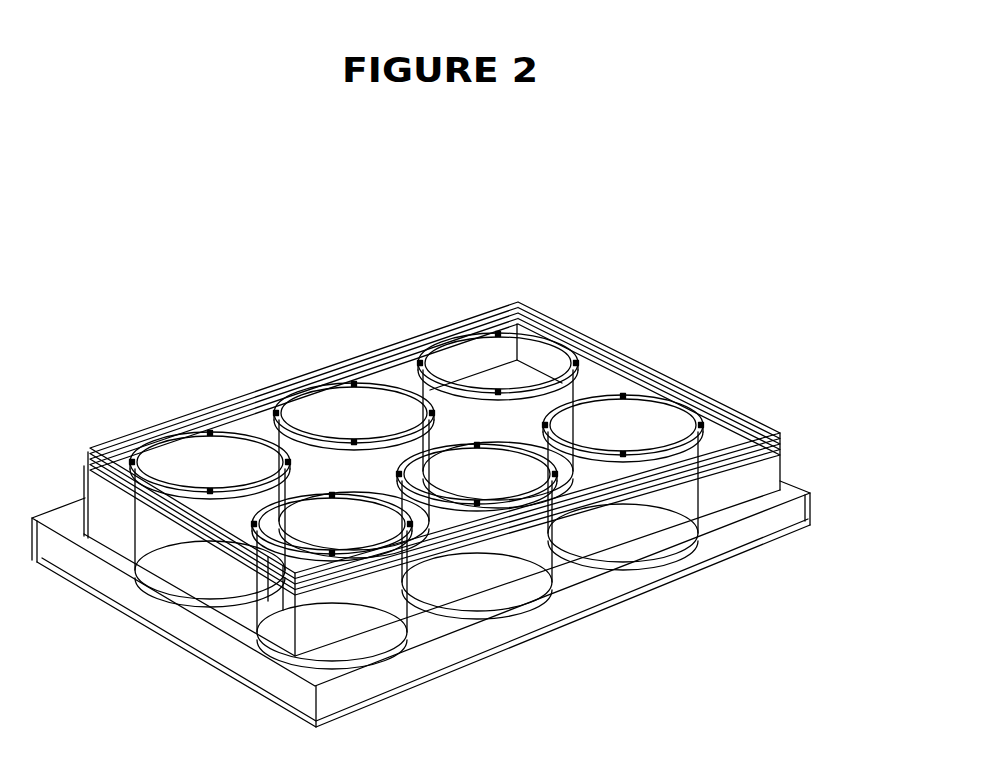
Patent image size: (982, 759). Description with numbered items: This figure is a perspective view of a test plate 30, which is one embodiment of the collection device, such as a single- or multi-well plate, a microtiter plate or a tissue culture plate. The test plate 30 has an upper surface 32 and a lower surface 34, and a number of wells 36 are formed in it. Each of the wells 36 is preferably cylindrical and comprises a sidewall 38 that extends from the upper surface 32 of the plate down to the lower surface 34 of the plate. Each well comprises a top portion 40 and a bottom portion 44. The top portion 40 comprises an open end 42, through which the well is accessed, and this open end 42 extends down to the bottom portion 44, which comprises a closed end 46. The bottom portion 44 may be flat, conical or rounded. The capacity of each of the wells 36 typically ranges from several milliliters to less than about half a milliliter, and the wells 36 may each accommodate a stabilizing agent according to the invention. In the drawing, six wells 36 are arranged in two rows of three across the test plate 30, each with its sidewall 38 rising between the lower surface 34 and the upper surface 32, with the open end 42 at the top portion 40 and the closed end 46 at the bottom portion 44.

The test plate 30 is at (772, 458).
The upper surface 32 is at (727, 433).
The lower surface 34 is at (460, 648).
The wells 36 is at (612, 432).
The sidewall 38 is at (290, 394).
The top portion 40 is at (688, 403).
The open end 42 is at (645, 457).
The bottom portion 44 is at (645, 568).
The closed end 46 is at (675, 548).